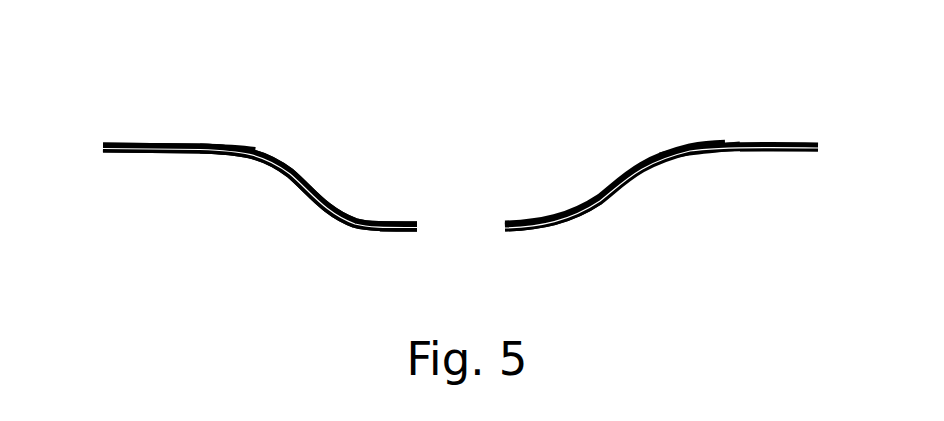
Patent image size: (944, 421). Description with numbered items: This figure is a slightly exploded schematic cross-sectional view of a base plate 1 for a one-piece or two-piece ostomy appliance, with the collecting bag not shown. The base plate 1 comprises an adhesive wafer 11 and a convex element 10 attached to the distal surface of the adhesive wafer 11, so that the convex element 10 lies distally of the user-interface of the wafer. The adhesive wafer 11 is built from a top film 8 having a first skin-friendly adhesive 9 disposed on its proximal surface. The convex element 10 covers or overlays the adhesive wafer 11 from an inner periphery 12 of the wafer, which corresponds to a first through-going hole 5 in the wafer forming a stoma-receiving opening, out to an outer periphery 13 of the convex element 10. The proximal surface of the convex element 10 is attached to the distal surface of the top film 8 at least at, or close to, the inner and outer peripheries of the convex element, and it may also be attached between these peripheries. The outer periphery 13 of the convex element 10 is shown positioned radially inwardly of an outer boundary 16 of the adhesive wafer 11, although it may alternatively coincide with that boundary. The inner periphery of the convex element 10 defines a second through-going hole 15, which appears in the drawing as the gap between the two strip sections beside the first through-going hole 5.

The base plate 1 is at (447, 163).
The first through-going hole 5 is at (437, 234).
The top film 8 is at (792, 143).
The first skin-friendly adhesive 9 is at (783, 153).
The convex element 10 is at (300, 163).
The adhesive wafer 11 is at (735, 143).
The inner periphery of the wafer 12 is at (420, 226).
The outer periphery of the convex element 13 is at (197, 142).
The second through-going hole 15 is at (480, 212).
The outer boundary of the wafer 16 is at (103, 143).